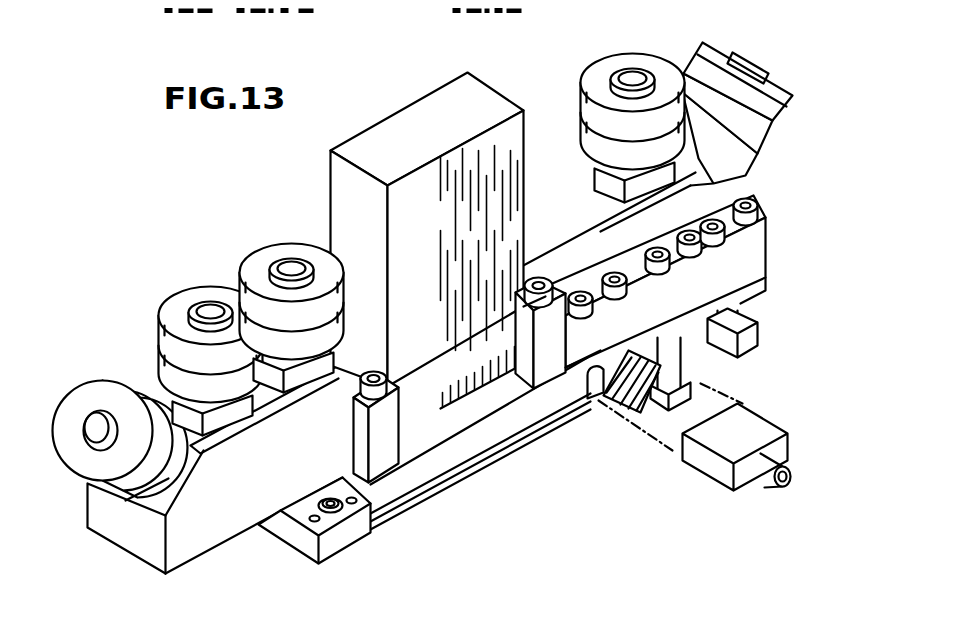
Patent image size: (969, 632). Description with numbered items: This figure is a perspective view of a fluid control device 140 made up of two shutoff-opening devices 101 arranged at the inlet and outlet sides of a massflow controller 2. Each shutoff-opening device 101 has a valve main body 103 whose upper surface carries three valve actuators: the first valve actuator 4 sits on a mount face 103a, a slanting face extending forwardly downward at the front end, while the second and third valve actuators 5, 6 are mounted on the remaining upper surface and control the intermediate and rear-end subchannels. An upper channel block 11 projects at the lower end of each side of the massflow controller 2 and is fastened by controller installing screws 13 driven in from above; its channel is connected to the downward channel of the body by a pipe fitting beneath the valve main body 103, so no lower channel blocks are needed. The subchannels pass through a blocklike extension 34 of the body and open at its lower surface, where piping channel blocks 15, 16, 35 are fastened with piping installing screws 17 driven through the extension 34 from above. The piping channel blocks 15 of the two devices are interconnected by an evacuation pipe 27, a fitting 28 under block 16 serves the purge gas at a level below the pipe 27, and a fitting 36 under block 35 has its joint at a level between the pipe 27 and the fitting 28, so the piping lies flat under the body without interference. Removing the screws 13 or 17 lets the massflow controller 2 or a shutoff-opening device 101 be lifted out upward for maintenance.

The massflow controller 2 is at (415, 116).
The first valve actuator 4 is at (770, 84).
The second valve actuator 5 is at (626, 52).
The third valve actuator 6 is at (550, 106).
The upper channel block 11 is at (393, 418).
The controller installing screw 13 is at (373, 370).
The piping channel block 15 is at (689, 318).
The piping channel block 16 is at (348, 537).
The piping installing screw 17 is at (578, 292).
The pipe 27 is at (463, 457).
The fitting 28 is at (670, 414).
The extension 34 is at (102, 518).
The piping channel block 35 is at (745, 285).
The fitting 36 is at (733, 338).
The shutoff-opening device 101 is at (255, 246).
The valve main body 103 is at (700, 200).
The mount face 103a is at (714, 194).
The fluid control device 140 is at (766, 286).